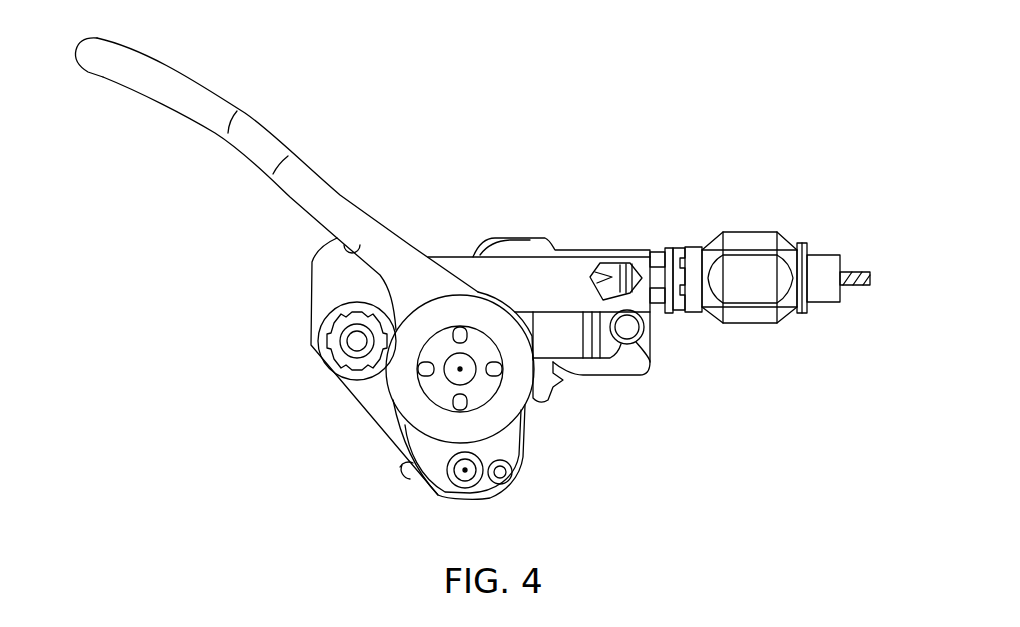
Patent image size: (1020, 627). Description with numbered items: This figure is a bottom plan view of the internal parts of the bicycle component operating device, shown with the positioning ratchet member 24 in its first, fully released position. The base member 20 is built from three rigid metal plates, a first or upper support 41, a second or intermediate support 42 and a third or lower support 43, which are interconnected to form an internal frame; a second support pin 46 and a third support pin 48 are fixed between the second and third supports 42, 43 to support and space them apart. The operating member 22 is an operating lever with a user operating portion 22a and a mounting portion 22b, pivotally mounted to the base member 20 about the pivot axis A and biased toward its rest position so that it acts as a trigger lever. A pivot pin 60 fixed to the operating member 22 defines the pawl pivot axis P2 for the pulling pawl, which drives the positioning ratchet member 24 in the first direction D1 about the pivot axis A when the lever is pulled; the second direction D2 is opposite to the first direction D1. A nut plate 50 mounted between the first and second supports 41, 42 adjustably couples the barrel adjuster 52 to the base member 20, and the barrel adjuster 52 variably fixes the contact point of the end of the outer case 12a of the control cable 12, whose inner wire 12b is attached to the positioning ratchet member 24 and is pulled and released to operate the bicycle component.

The control cable 12 is at (884, 196).
The outer case 12a is at (818, 253).
The inner wire 12b is at (857, 270).
The base member 20 is at (326, 399).
The operating member 22 is at (318, 175).
The user operating portion 22a is at (132, 70).
The mounting portion 22b is at (496, 438).
The positioning ratchet member 24 is at (548, 406).
The first support 41 is at (628, 249).
The second support 42 is at (311, 293).
The third support 43 is at (567, 381).
The second support pin 46 is at (648, 363).
The third support pin 48 is at (355, 341).
The nut plate 50 is at (657, 310).
The barrel adjuster 52 is at (762, 328).
The pivot pin 60 is at (483, 486).
The pivot axis A is at (457, 373).
The first direction D1 is at (408, 338).
The second direction D2 is at (501, 328).
The pawl pivot axis P2 is at (463, 476).